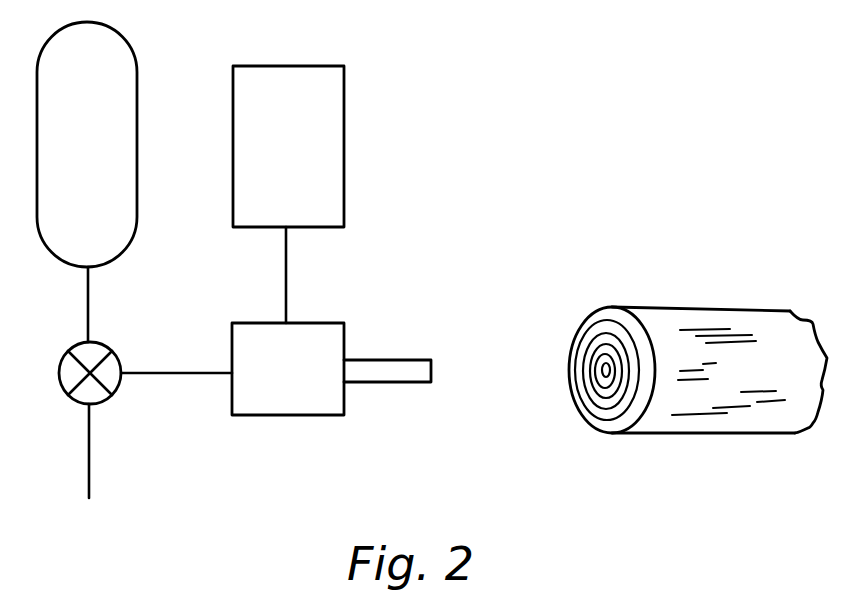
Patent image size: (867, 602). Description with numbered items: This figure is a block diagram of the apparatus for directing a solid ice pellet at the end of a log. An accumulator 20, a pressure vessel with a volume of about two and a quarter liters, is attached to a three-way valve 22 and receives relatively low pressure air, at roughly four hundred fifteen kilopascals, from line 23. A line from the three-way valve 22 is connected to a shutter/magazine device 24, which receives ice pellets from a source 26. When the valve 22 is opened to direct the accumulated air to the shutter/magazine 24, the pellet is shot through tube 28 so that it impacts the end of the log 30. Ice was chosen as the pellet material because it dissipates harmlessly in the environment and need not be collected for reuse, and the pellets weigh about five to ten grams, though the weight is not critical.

The accumulator 20 is at (102, 156).
The three-way valve 22 is at (81, 410).
The line 23 is at (85, 487).
The shutter/magazine device 24 is at (230, 406).
The source 26 is at (304, 171).
The tube 28 is at (372, 360).
The log 30 is at (680, 434).